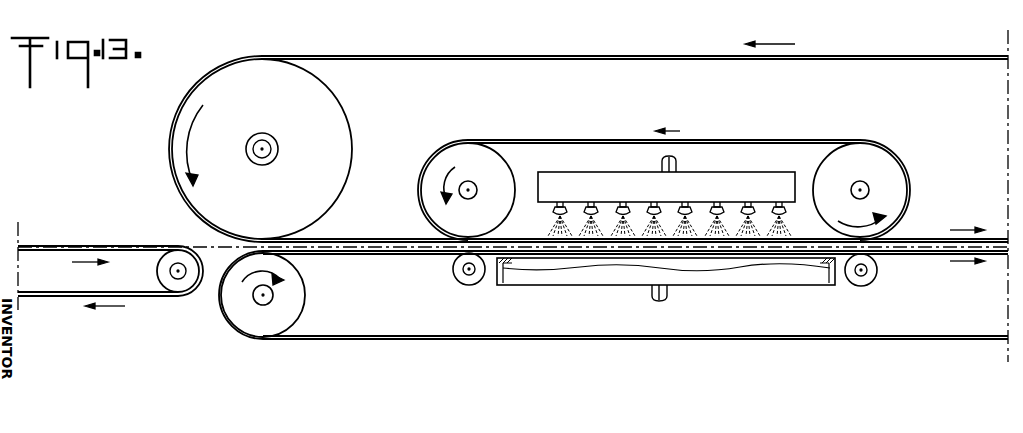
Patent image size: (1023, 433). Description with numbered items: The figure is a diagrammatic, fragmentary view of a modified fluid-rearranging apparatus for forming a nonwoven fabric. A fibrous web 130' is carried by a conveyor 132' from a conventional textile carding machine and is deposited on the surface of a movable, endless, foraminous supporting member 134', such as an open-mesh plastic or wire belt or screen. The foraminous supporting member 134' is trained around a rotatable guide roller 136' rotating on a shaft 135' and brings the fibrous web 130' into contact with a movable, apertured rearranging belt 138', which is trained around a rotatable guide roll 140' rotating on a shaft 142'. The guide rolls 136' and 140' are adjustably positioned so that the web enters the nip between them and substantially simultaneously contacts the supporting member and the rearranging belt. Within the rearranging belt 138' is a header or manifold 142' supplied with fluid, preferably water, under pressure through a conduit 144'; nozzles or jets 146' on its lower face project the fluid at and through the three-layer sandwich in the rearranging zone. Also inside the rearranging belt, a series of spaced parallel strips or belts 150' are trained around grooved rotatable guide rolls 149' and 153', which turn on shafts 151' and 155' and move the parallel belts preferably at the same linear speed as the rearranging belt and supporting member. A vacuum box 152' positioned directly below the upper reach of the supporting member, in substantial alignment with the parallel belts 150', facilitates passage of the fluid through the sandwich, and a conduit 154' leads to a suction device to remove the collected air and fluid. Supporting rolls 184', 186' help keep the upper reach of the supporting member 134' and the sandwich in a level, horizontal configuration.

The rearranging belt 138' is at (588, 129).
The guide roll 140' is at (291, 149).
The shaft / header 142' is at (529, 151).
The conduit 144' is at (707, 136).
The nozzles or jets 146' is at (669, 204).
The grooved guide roll 149' is at (468, 166).
The roller shaft 151' is at (425, 206).
The parallel strips or belts 150' is at (860, 168).
The grooved guide roll 153' is at (902, 176).
The roller shaft 155' is at (917, 183).
The fibrous web 130' is at (110, 250).
The conveyor 132' is at (92, 322).
The foraminous supporting member 134' is at (613, 311).
The shaft 135' is at (307, 284).
The guide roller 136' is at (297, 295).
The supporting roll 184' is at (464, 289).
The supporting roll 186' is at (881, 288).
The vacuum box 152' is at (666, 289).
The conduit 154' is at (689, 302).